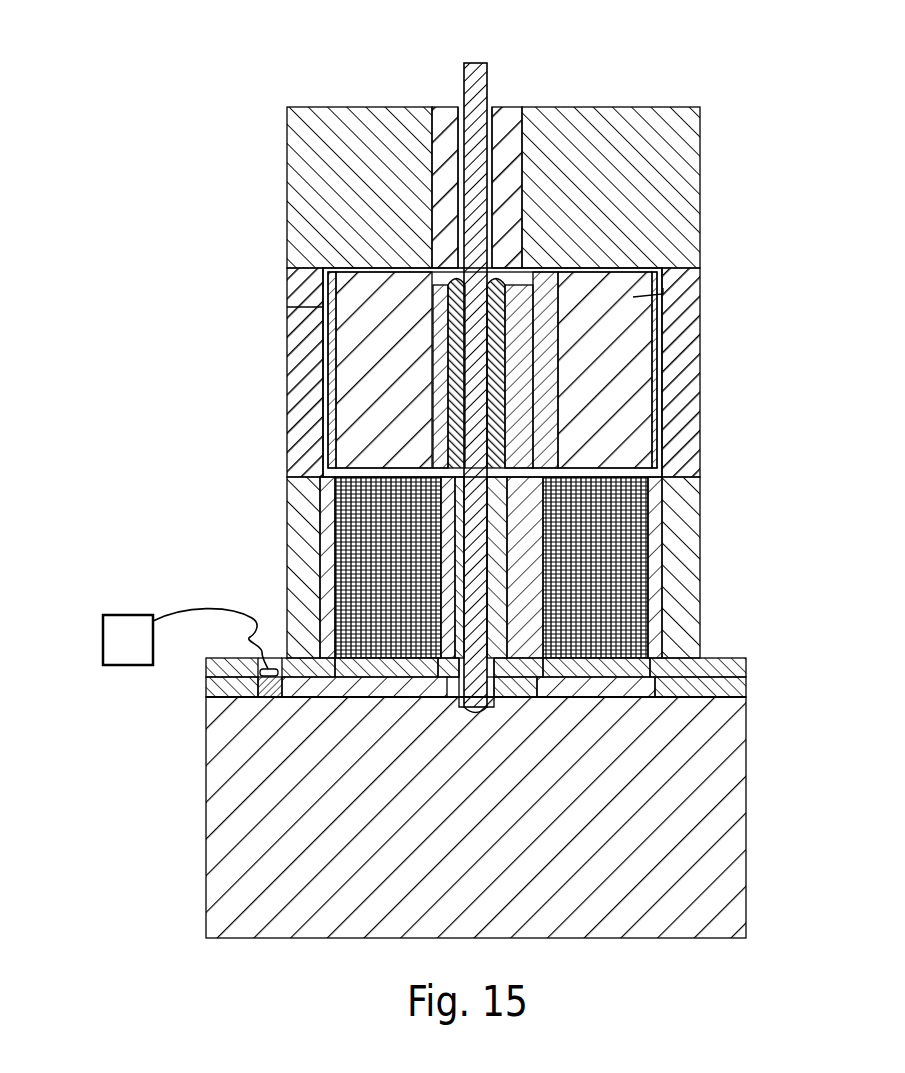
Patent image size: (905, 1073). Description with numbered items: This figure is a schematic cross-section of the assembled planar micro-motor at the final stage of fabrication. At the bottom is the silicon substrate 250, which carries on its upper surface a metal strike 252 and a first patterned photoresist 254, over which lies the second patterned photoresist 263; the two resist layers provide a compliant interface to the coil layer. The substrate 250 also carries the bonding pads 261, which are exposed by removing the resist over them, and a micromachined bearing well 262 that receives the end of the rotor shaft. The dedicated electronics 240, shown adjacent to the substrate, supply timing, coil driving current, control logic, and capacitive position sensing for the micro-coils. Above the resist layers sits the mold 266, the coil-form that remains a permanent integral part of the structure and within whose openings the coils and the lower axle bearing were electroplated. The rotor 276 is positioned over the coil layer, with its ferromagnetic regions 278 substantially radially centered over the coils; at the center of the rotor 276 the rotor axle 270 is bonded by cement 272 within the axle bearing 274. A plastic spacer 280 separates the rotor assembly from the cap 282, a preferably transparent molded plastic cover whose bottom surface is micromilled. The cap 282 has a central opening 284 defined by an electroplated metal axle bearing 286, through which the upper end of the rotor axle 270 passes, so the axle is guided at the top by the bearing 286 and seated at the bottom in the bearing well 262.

The dedicated electronics 240 is at (103, 648).
The silicon substrate 250 is at (705, 748).
The metal strike 252 is at (718, 697).
The patterned photoresist 254 is at (750, 688).
The bonding pads 261 is at (254, 680).
The bearing well 262 is at (484, 712).
The second patterned photoresist 263 is at (747, 658).
The mold 266 is at (706, 568).
The rotor axle 270 is at (489, 113).
The cement 272 is at (500, 282).
The axle bearing 274 is at (507, 341).
The rotor 276 is at (325, 310).
The ferromagnetic regions 278 is at (690, 268).
The plastic spacer 280 is at (290, 376).
The cap 282 is at (300, 190).
The central opening 284 is at (490, 127).
The axle bearing 286 is at (510, 123).